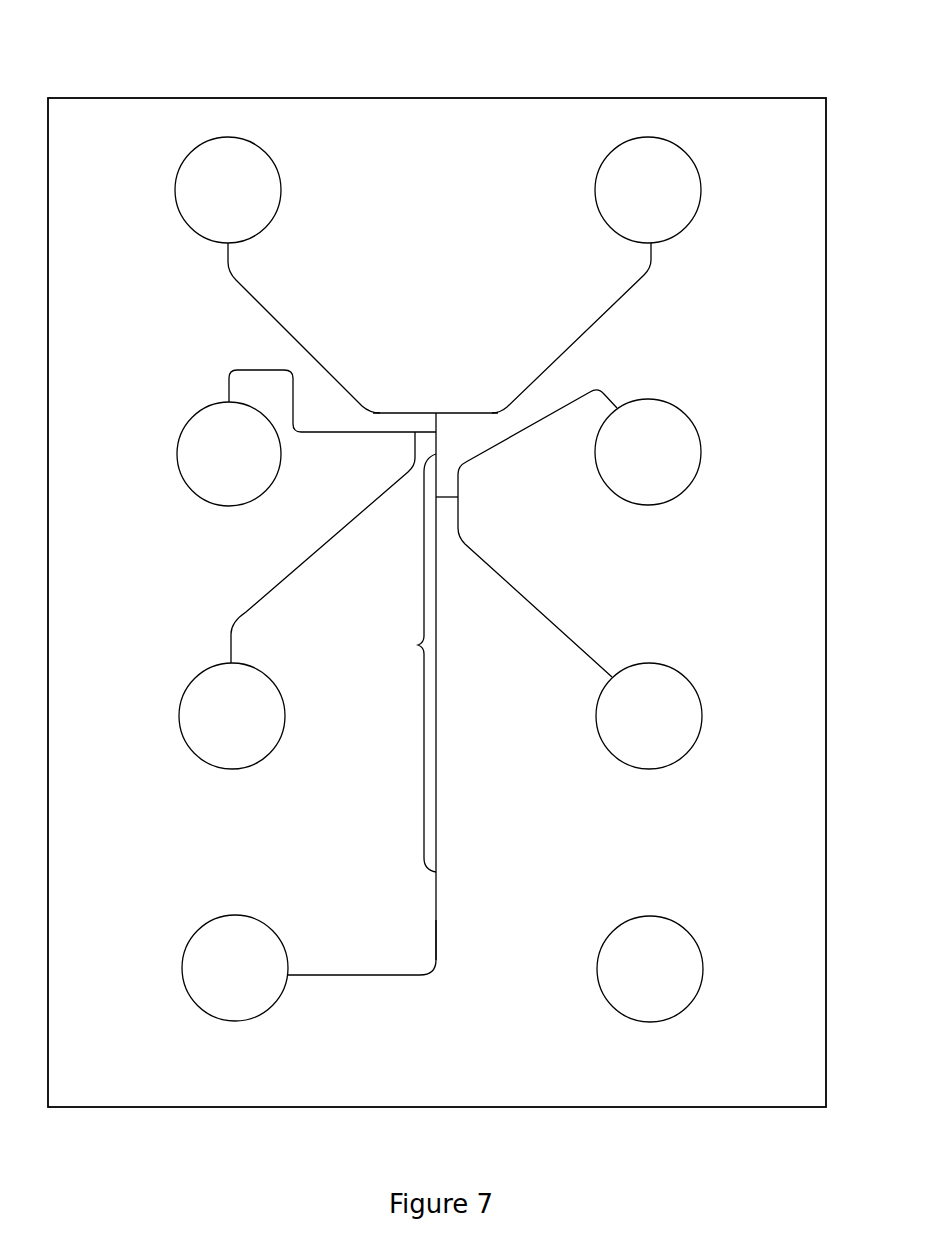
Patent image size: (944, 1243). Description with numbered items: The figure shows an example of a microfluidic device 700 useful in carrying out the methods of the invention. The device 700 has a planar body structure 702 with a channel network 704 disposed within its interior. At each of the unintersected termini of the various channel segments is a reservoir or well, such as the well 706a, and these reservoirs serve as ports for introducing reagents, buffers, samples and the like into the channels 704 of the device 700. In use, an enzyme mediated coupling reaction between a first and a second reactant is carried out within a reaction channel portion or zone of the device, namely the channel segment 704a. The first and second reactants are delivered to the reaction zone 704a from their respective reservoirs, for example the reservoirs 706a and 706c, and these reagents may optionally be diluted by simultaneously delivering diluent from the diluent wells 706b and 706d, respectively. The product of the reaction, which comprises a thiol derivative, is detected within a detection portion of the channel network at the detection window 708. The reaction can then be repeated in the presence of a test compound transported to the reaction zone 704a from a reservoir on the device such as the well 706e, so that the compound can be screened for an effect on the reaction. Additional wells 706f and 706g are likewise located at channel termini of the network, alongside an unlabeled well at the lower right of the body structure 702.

The microfluidic device 700 is at (78, 82).
The planar body structure 702 is at (826, 337).
The channel network 704 is at (438, 401).
The channel segment 704a is at (394, 663).
The well 706a is at (277, 275).
The diluent well 706b is at (596, 275).
The reservoir 706c is at (306, 438).
The diluent well 706d is at (297, 600).
The well 706e is at (568, 459).
The contact pad 706f is at (580, 648).
The contact pad 706g is at (309, 968).
The detection window 708 is at (437, 935).